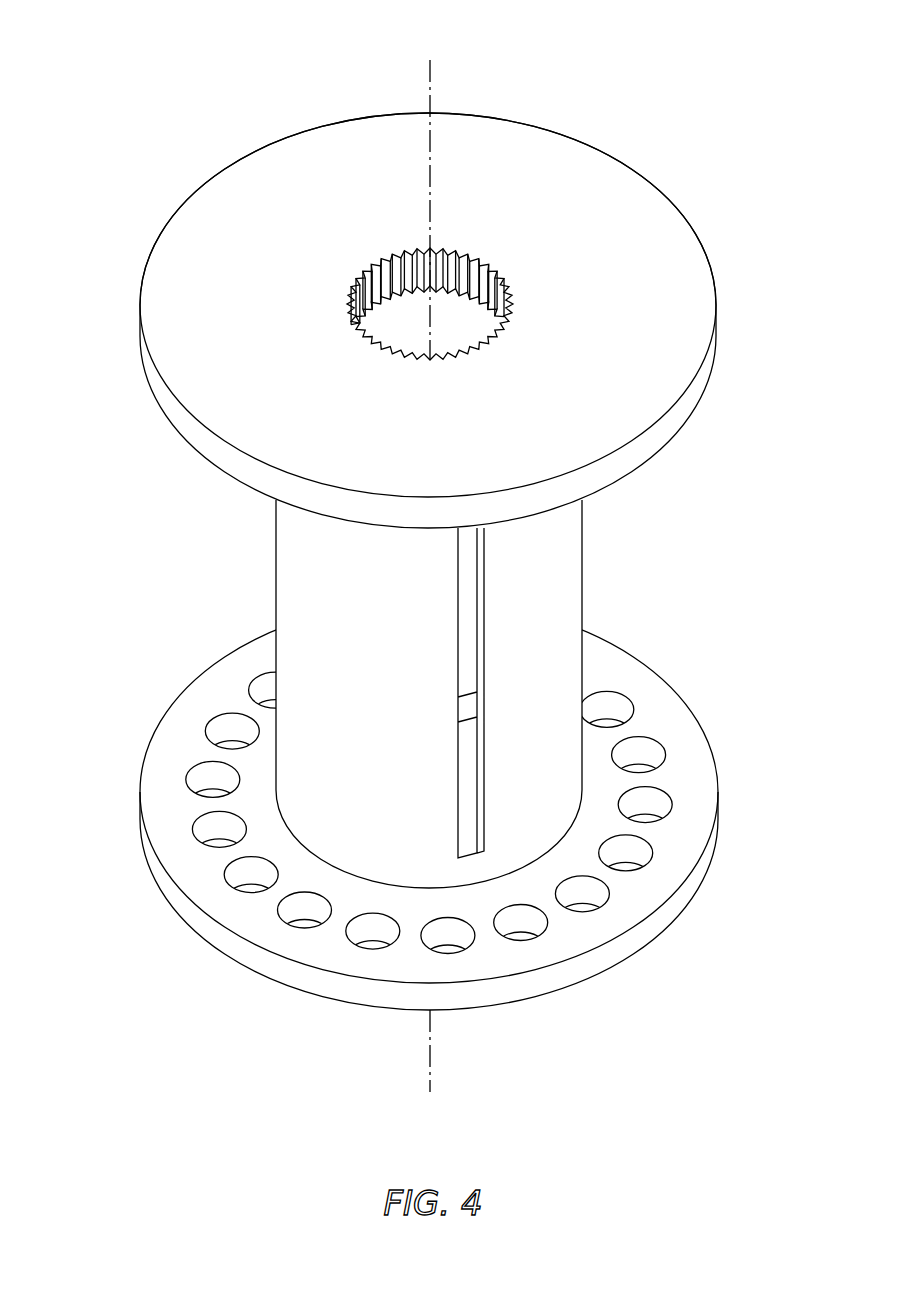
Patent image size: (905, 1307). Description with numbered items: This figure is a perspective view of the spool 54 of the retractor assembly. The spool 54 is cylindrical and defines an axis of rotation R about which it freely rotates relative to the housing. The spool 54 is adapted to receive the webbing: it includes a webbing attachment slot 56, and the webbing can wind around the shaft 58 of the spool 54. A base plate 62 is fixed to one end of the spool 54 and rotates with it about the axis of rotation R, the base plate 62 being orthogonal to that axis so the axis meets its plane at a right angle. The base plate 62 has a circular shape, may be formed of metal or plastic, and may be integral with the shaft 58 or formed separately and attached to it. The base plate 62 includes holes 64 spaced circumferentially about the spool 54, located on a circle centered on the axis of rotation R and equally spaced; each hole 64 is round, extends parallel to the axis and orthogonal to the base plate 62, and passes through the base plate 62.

The spool 54 is at (438, 561).
The webbing attachment slot 56 is at (485, 610).
The shaft 58 is at (437, 694).
The base plate 62 is at (439, 805).
The holes 64 is at (645, 850).